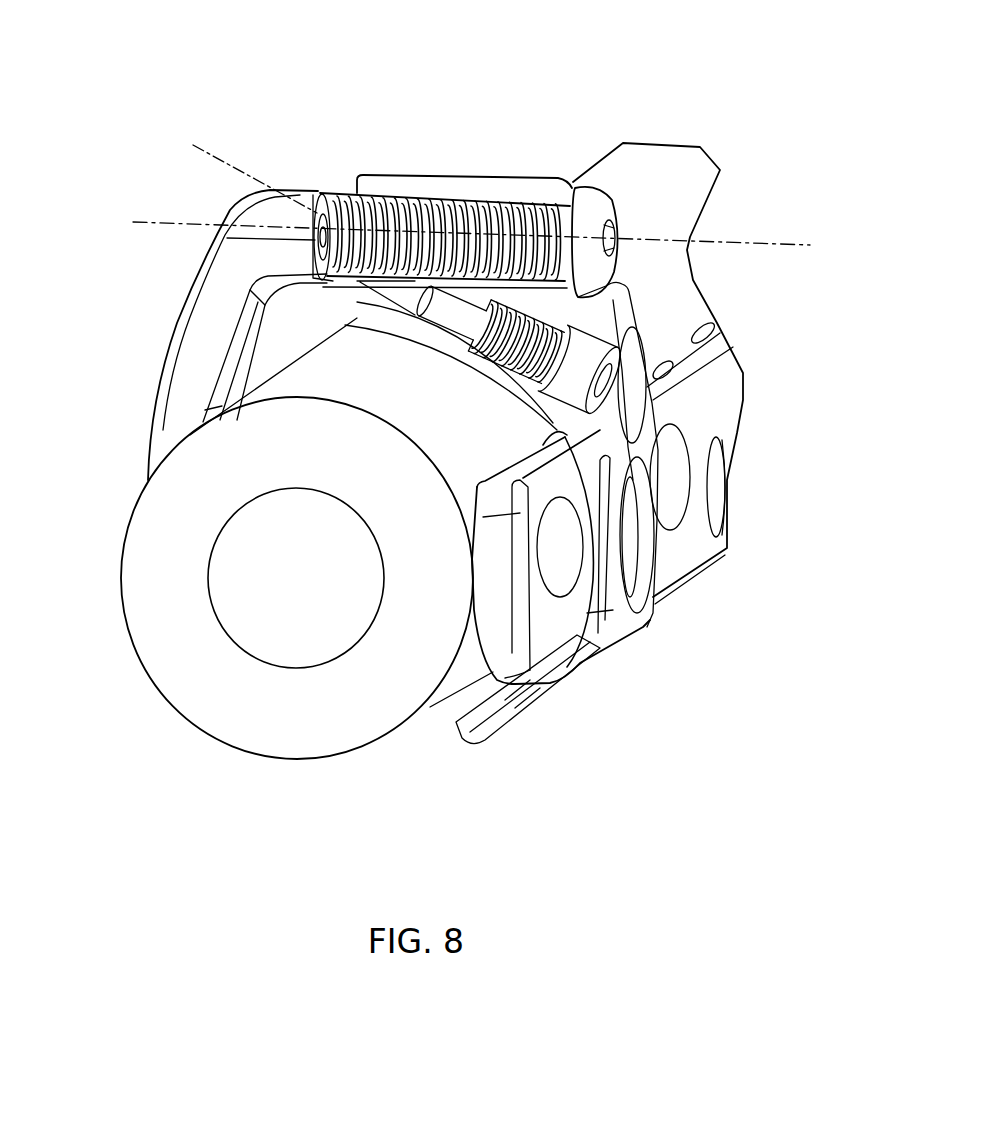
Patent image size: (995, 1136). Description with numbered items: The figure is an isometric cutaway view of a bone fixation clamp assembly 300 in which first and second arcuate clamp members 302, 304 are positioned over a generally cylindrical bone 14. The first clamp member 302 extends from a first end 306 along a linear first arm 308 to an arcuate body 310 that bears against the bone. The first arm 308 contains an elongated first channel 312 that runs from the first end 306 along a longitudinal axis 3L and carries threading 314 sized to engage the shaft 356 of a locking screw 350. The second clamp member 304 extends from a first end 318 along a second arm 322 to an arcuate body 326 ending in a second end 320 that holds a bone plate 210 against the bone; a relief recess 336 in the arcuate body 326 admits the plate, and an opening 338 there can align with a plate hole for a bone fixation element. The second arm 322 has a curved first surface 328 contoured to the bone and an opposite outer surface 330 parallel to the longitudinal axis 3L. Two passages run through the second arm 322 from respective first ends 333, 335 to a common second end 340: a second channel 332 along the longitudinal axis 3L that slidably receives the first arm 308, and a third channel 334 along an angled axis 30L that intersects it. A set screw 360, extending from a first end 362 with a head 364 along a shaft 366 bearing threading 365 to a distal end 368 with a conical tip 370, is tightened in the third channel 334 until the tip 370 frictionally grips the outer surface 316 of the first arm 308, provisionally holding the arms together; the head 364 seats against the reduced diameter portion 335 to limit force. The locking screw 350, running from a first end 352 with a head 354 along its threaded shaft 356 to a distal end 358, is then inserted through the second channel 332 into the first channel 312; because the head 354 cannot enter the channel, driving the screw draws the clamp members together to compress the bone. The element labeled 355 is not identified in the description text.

The clamp assembly 300 is at (137, 143).
The axis 30L is at (243, 166).
The longitudinal axis 3L is at (458, 223).
The bone 14 is at (160, 508).
The first clamp member 302 is at (180, 370).
The arcuate body 310 is at (200, 316).
The first arm 308 is at (335, 200).
The outer surface 330 is at (400, 175).
The first end 306 is at (530, 200).
The threading 314 is at (470, 200).
The first end 318 is at (357, 192).
The first channel 312 is at (443, 200).
The shaft 356 is at (420, 200).
The outer surface 316 is at (497, 200).
The distal end 358 is at (373, 200).
The second end 340 is at (355, 192).
The locking screw 350 is at (612, 195).
The first end 352 is at (625, 228).
The second channel 332 is at (575, 206).
The first end 333 is at (575, 183).
The second arm 322 is at (567, 182).
The head 354 is at (597, 187).
The bone plate 210 is at (717, 548).
The shaft 366 is at (557, 323).
The first end 362 is at (640, 350).
The set screw 360 is at (623, 363).
The third channel 334 is at (620, 407).
The arcuate body 326 is at (655, 476).
The reduced diameter portion 335 is at (650, 473).
The second clamp member 304 is at (633, 625).
The relief recess 336 is at (580, 623).
The opening 338 is at (640, 620).
The second end 320 is at (462, 735).
The stud 355 is at (430, 352).
The head 364 is at (608, 360).
The first surface 328 is at (497, 387).
The threading 365 is at (483, 357).
The conical tip 370 is at (357, 318).
The distal end 368 is at (345, 288).